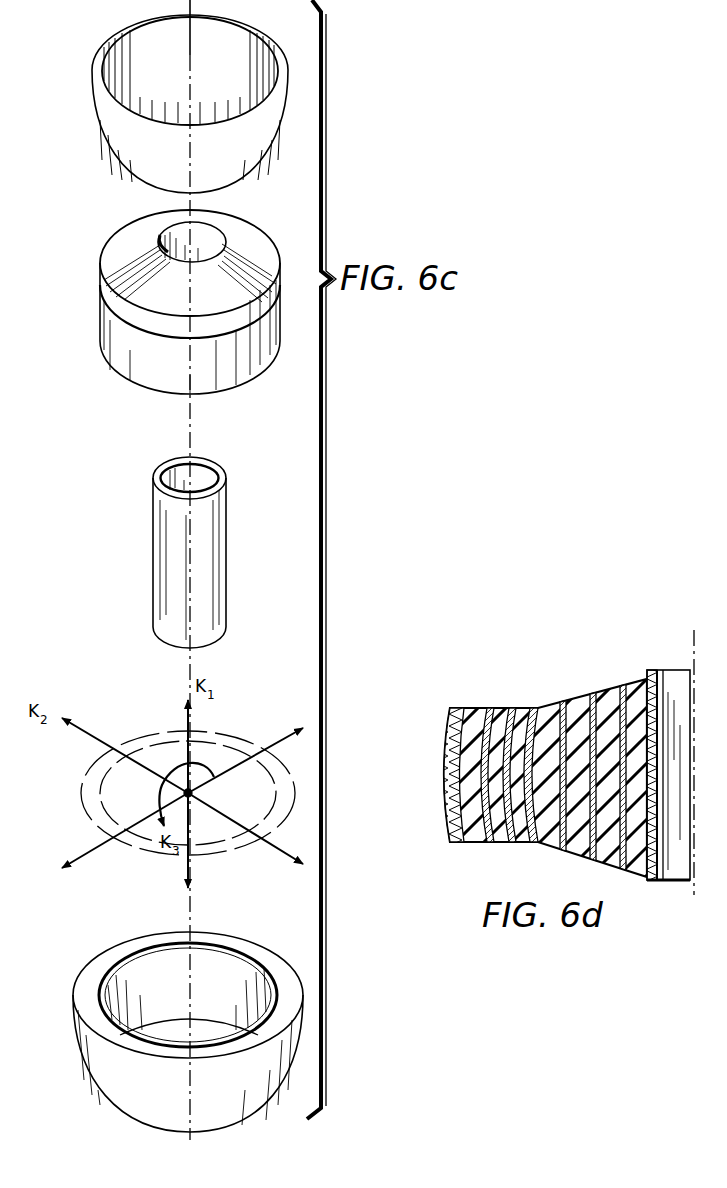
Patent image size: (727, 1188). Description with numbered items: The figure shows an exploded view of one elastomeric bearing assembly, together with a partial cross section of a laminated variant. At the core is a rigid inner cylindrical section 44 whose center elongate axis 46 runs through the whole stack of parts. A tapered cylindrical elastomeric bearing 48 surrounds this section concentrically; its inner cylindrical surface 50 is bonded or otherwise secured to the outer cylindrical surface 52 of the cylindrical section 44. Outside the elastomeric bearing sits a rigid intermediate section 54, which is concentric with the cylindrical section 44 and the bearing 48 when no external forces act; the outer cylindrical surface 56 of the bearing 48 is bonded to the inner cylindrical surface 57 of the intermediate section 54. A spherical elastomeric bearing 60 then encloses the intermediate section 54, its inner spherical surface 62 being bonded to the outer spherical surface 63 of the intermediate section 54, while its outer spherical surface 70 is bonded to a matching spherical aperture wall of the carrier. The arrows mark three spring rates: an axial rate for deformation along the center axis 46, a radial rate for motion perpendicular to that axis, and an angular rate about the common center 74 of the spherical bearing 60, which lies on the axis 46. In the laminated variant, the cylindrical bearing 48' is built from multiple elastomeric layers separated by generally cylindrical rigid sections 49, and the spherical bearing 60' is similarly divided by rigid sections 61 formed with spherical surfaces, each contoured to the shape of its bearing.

In FIG. 6c, the rigid inner cylindrical section 44 is at (150, 517).
In FIG. 6d, the rigid inner cylindrical section 44 is at (653, 880).
In FIG. 6c, the center elongate axis 46 is at (192, 414).
In FIG. 6c, the tapered cylindrical elastomeric bearing 48 is at (161, 302).
In FIG. 6d, the laminated cylindrical elastomeric bearing 48' is at (478, 768).
In FIG. 6d, the rigid sections 49 is at (600, 848).
In FIG. 6c, the inner cylindrical surface 50 is at (180, 233).
In FIG. 6c, the outer cylindrical surface 52 is at (158, 598).
In FIG. 6c, the rigid intermediate section 54 is at (261, 32).
In FIG. 6d, the rigid intermediate section 54 is at (529, 724).
In FIG. 6c, the outer cylindrical surface 56 is at (138, 372).
In FIG. 6c, the inner cylindrical surface 57 is at (142, 42).
In FIG. 6c, the spherical elastomeric bearing 60 is at (166, 1032).
In FIG. 6d, the laminated spherical elastomeric bearing 60' is at (469, 756).
In FIG. 6d, the rigid sections 61 is at (509, 843).
In FIG. 6c, the inner spherical surface 62 is at (232, 962).
In FIG. 6c, the outer spherical surface 63 is at (254, 150).
In FIG. 6c, the outer spherical surface 70 is at (94, 1076).
In FIG. 6c, the common center 74 is at (205, 793).